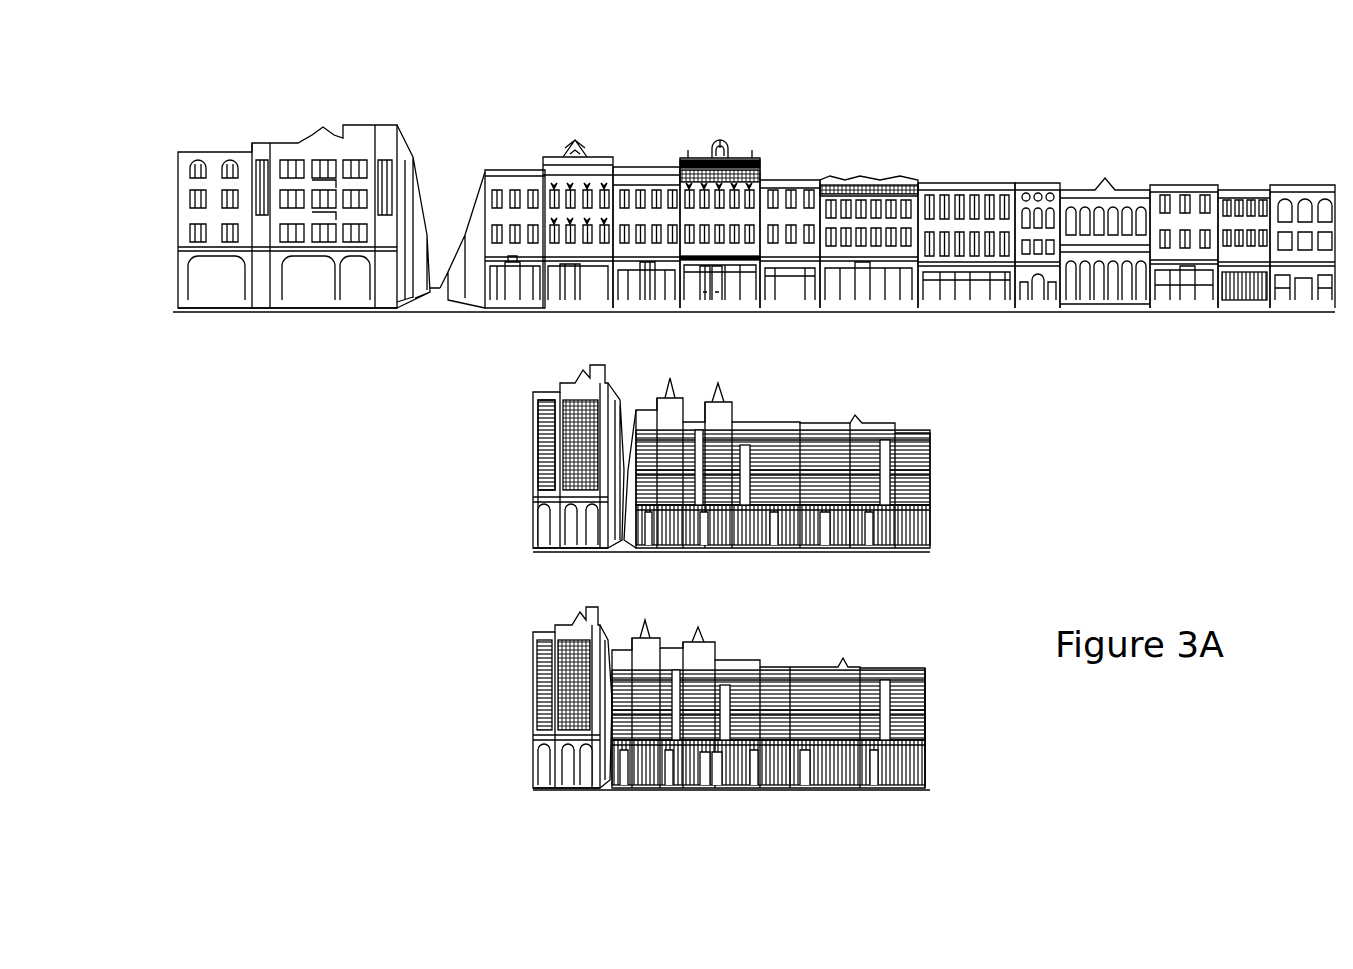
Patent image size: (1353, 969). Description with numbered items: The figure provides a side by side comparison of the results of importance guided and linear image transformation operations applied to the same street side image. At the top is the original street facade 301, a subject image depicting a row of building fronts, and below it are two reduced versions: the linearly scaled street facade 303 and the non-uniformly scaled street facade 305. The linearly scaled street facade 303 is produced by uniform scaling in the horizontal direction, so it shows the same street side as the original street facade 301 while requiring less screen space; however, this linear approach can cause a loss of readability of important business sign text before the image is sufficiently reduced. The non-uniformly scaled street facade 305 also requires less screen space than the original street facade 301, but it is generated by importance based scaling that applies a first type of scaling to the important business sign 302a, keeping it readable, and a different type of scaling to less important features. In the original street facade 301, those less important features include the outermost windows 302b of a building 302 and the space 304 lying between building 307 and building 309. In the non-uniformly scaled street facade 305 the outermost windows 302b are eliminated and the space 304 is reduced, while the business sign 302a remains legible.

The original street facade 301 is at (126, 217).
The building facade 302 is at (736, 140).
The business sign 302a is at (688, 248).
The outermost windows 302b is at (770, 192).
The linearly scaled street facade 303 is at (410, 480).
The space 304 is at (457, 165).
The non-uniformly scaled street facade 305 is at (410, 717).
The building 307 is at (322, 118).
The building 309 is at (516, 165).